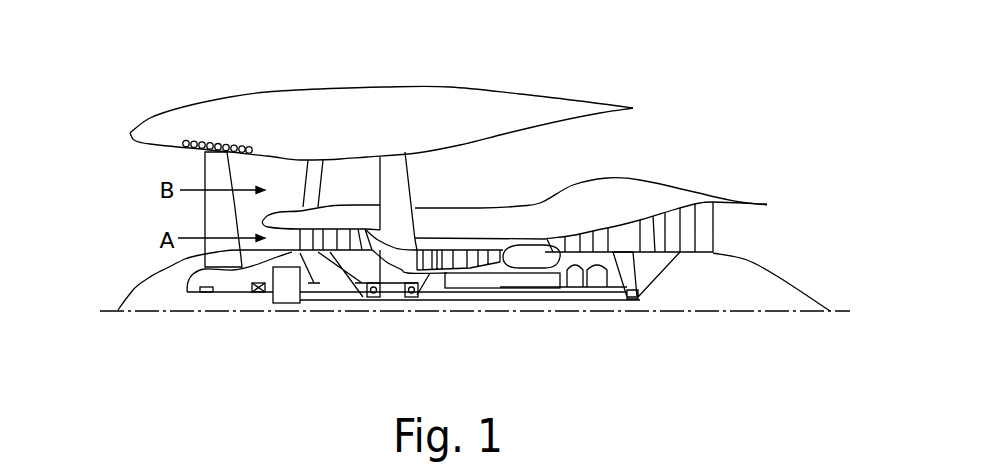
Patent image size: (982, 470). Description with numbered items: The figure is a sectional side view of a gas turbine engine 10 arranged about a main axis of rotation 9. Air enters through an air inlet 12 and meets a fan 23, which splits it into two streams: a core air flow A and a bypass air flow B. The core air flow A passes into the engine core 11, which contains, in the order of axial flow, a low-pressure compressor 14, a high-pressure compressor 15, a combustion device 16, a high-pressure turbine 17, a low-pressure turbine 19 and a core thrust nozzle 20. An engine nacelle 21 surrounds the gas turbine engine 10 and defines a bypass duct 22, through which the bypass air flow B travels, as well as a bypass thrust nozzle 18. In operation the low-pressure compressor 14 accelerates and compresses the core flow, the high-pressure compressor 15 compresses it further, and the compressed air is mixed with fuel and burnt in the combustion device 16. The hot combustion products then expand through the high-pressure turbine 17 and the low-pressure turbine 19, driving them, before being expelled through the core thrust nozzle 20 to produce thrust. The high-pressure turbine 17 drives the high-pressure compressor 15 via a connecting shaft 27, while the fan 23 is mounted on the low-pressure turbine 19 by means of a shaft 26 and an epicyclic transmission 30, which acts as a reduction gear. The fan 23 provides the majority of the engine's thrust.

The main axis of rotation 9 is at (738, 312).
The gas turbine engine 10 is at (178, 107).
The core 11 is at (537, 222).
The air inlet 12 is at (140, 170).
The low-pressure compressor 14 is at (340, 232).
The high-pressure compressor 15 is at (463, 258).
The combustion device 16 is at (525, 258).
The high-pressure turbine 17 is at (580, 237).
The bypass thrust nozzle 18 is at (720, 103).
The low-pressure turbine 19 is at (691, 240).
The core thrust nozzle 20 is at (768, 238).
The engine nacelle 21 is at (391, 102).
The bypass duct 22 is at (599, 143).
The fan 23 is at (212, 226).
The shaft 26 is at (433, 300).
The connecting shaft 27 is at (490, 290).
The epicyclic transmission 30 is at (288, 297).